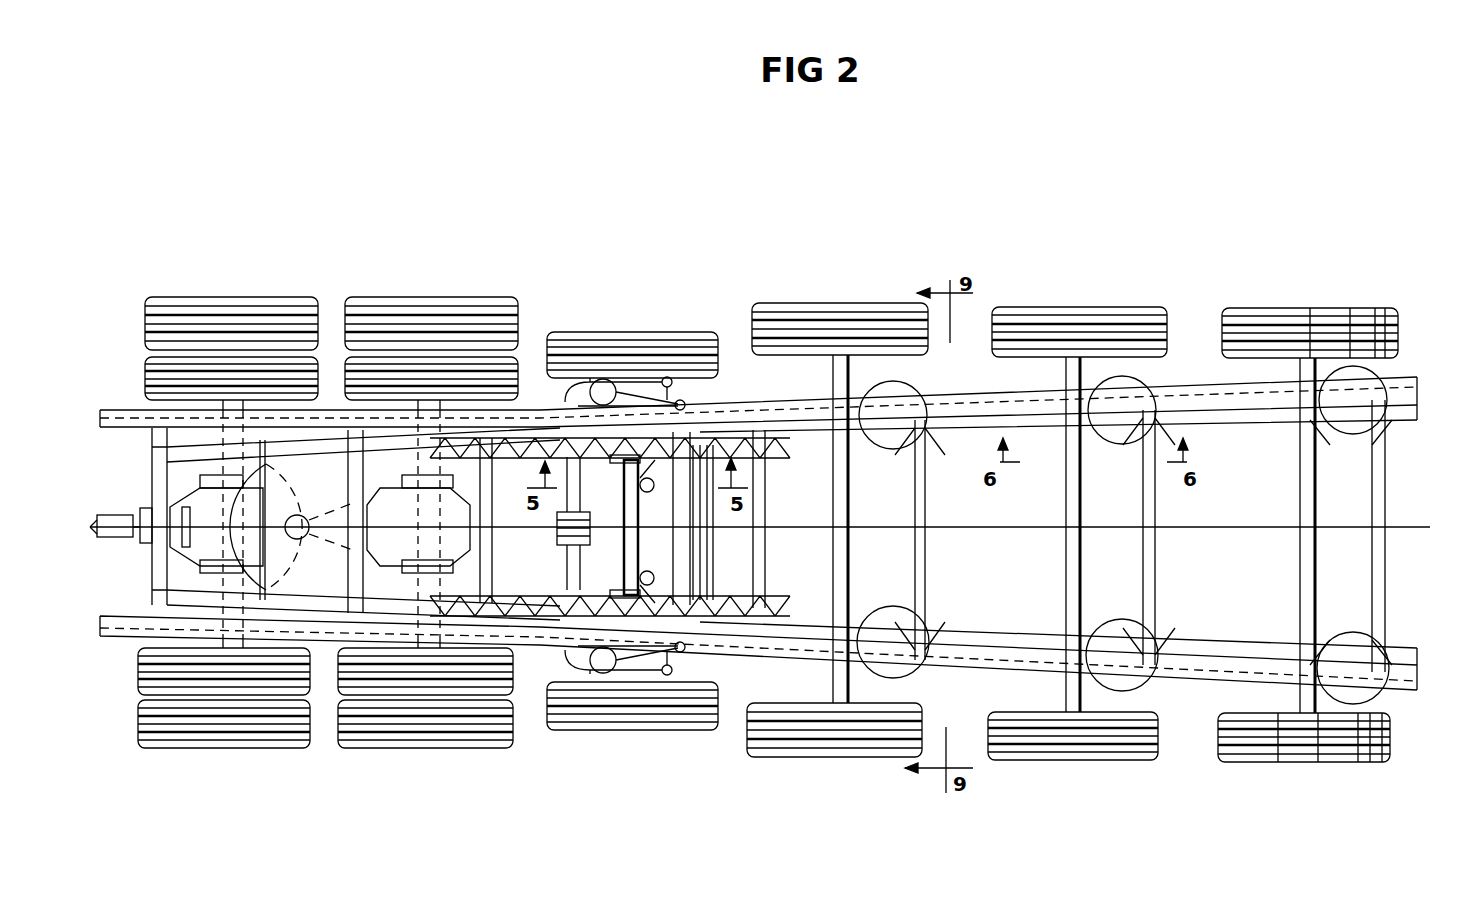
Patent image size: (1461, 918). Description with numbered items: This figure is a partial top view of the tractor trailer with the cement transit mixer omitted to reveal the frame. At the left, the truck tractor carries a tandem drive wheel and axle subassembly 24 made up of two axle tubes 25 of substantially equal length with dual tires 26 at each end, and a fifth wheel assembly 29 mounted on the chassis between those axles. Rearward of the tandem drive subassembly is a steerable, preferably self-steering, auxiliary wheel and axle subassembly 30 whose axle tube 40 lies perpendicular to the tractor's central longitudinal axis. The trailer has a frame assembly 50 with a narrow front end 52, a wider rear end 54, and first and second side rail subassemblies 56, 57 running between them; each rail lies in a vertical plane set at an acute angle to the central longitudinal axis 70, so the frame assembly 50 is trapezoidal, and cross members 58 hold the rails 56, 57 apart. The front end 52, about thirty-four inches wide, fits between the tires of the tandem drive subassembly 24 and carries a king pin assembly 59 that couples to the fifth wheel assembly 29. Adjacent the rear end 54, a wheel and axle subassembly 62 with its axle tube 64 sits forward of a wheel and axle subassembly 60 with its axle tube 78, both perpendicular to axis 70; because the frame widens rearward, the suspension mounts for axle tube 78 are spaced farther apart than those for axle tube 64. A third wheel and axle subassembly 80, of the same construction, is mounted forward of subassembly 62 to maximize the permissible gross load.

The tandem drive wheel and axle subassembly 24 is at (353, 748).
The axle tube 25 is at (430, 472).
The dual tires 26 is at (403, 297).
The fifth wheel assembly 29 is at (283, 552).
The auxiliary wheel and axle subassembly 30 is at (673, 332).
The axle tube 40 is at (622, 520).
The frame assembly 50 is at (952, 395).
The front end 52 is at (162, 563).
The rear end 54 is at (1412, 689).
The first side rail subassembly 56 is at (729, 408).
The second side rail subassembly 57 is at (937, 663).
The cross members 58 is at (1148, 577).
The king pin assembly 59 is at (288, 515).
The wheel and axle subassembly 60 is at (1290, 762).
The wheel and axle subassembly 62 is at (1077, 567).
The axle tube 64 is at (1072, 510).
The central longitudinal axis 70 is at (1410, 540).
The axle tube 78 is at (1307, 462).
The third wheel and axle subassembly 80 is at (826, 756).